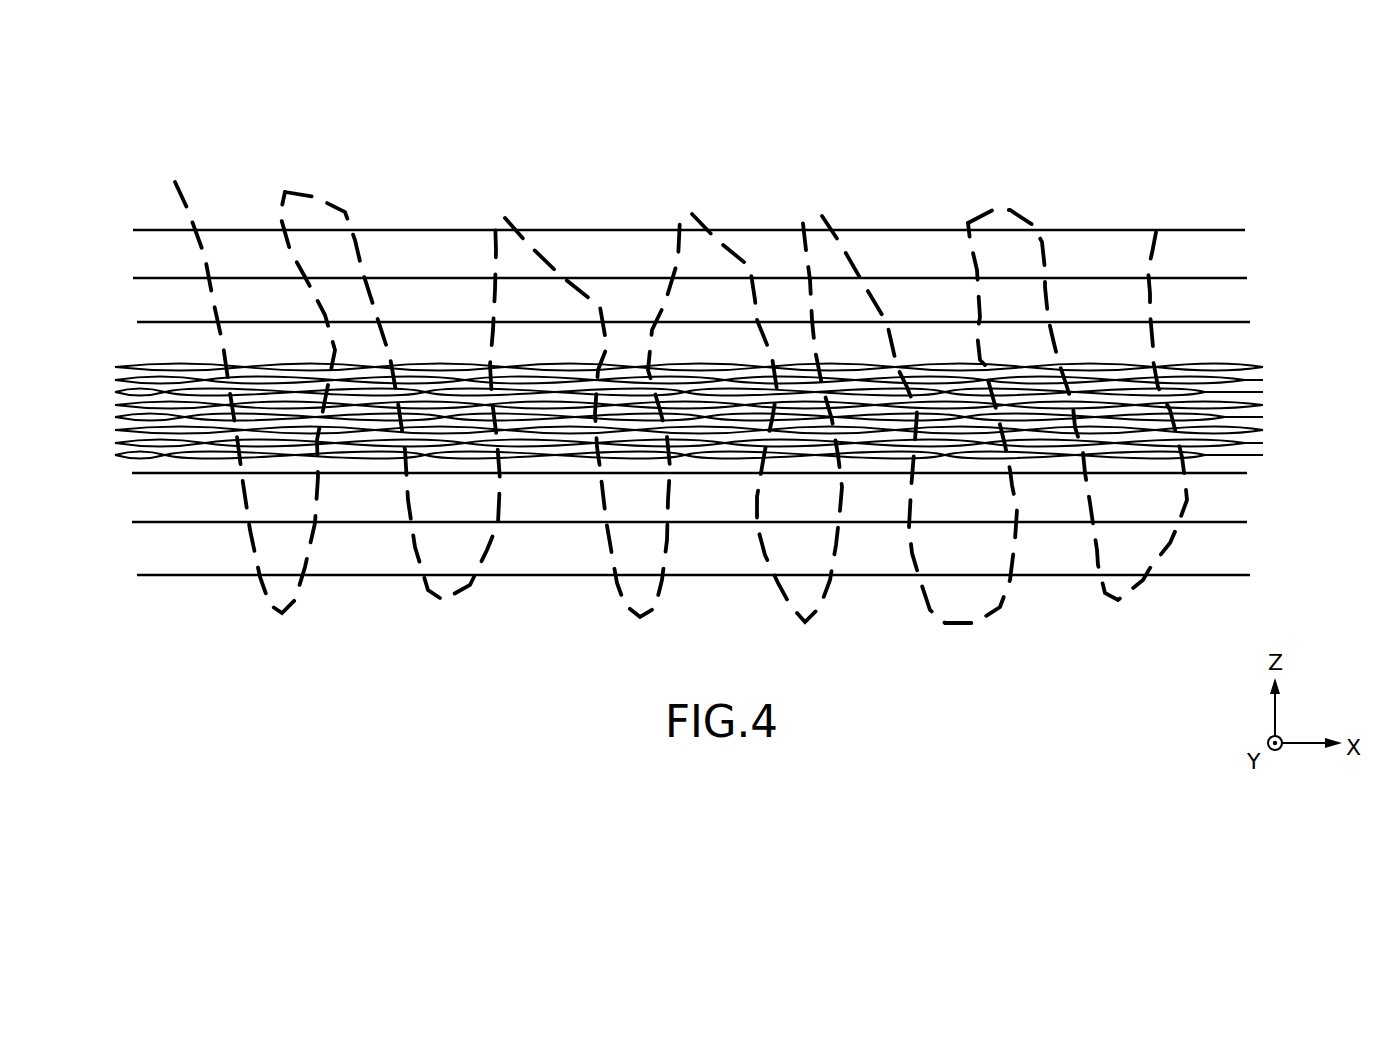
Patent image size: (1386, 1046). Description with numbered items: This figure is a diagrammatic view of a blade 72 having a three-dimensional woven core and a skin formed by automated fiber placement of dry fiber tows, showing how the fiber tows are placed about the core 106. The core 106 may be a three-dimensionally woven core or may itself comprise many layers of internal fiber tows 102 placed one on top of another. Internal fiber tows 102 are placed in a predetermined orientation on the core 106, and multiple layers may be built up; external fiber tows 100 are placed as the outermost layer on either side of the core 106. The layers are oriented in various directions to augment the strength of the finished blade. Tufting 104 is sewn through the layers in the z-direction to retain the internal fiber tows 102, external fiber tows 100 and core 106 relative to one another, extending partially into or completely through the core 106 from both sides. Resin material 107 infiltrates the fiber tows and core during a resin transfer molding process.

The composite structure 72 is at (264, 99).
The external fiber tows 100 is at (565, 230).
The internal fiber tows 102 is at (920, 278).
The tufting 104 is at (750, 267).
The core 106 is at (152, 412).
The resin material 107 is at (150, 248).